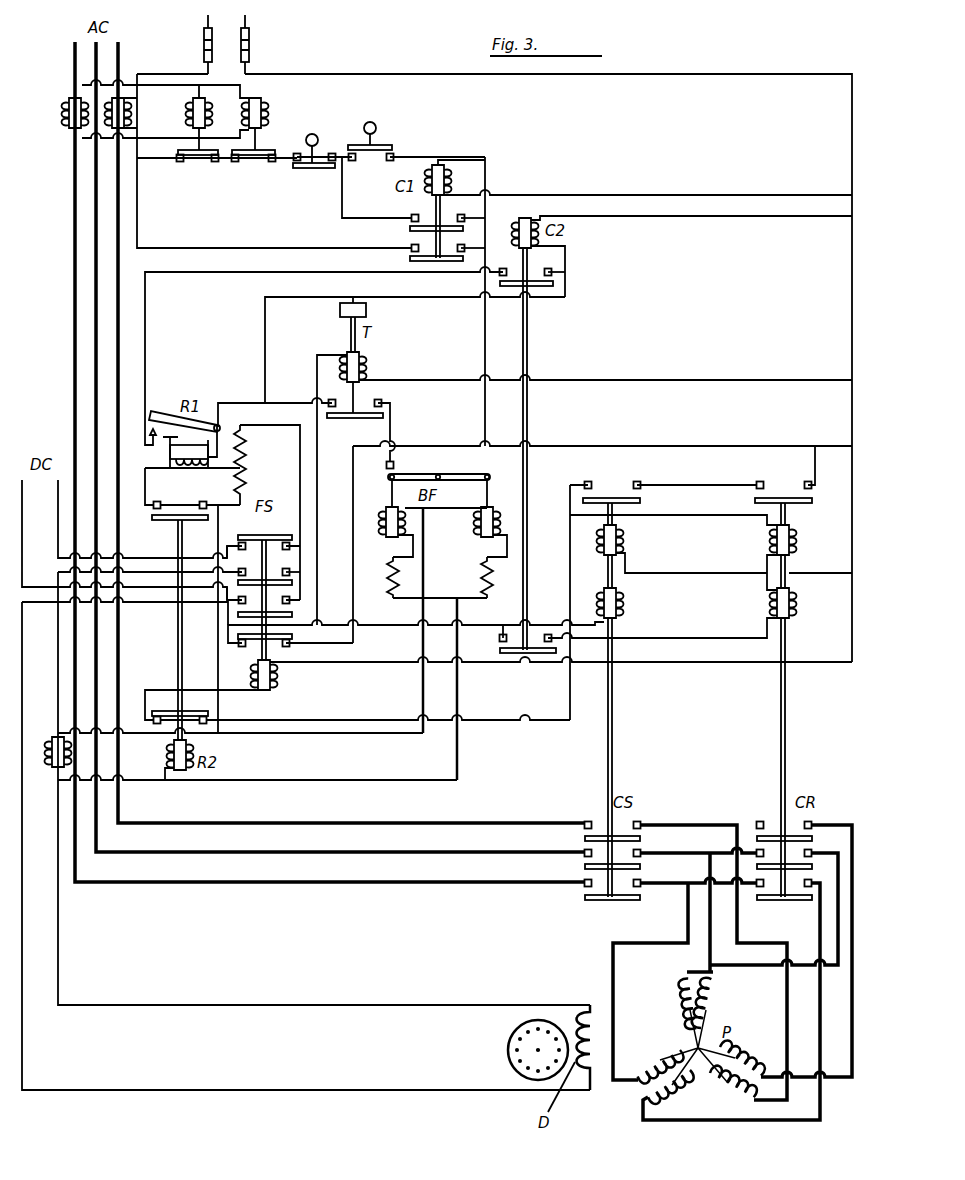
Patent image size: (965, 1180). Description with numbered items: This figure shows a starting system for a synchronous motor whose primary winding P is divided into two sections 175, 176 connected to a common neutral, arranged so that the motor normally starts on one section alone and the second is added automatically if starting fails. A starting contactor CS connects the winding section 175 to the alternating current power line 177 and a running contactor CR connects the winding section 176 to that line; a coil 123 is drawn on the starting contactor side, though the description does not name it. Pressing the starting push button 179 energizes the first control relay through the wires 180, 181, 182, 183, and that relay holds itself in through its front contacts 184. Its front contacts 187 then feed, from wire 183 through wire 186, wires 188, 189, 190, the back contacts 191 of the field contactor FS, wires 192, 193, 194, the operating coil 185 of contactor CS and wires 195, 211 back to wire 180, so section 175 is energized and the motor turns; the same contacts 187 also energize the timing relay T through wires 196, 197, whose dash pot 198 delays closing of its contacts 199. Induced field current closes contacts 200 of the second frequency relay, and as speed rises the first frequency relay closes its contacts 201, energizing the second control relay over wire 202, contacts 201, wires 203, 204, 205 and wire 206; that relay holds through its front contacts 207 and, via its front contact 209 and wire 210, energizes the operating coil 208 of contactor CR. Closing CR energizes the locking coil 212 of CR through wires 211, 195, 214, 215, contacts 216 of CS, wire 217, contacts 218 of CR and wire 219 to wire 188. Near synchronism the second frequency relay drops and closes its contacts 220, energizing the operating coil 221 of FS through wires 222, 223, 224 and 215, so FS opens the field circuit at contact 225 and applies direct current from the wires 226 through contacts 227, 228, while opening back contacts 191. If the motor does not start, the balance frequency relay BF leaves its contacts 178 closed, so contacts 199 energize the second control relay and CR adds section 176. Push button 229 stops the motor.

The relay coil 123 is at (623, 545).
The primary winding section 175 is at (718, 1002).
The primary winding section 176 is at (680, 1000).
The alternating current power line 177 is at (398, 853).
The contacts of balance frequency relay BF 178 is at (400, 468).
The starting push button 179 is at (386, 137).
The wire 180 is at (667, 77).
The wire 181 is at (647, 194).
The wire 182 is at (140, 162).
The wire 183 is at (180, 72).
The front contacts of relay C1 184 is at (428, 224).
The operating coil of starting contactor CS 185 is at (630, 617).
The wire 186 is at (233, 250).
The front contacts of relay C1 187 is at (420, 248).
The wire 188 is at (483, 325).
The wire 189 is at (435, 447).
The wire 190 is at (353, 530).
The back contacts of field contactor FS 191 is at (292, 648).
The wire 192 is at (228, 638).
The wire 193 is at (380, 639).
The wire 194 is at (540, 641).
The wire 195 is at (706, 577).
The wire 196 is at (322, 483).
The wire 197 is at (420, 376).
The dash pot 198 is at (368, 308).
The contacts of timing relay T 199 is at (366, 404).
The contacts of frequency relay R2 200 is at (192, 604).
The contacts of frequency relay R1 201 is at (160, 412).
The wire 202 is at (258, 268).
The wire 203 is at (244, 396).
The wire 204 is at (267, 345).
The wire 205 is at (566, 266).
The wire 206 is at (678, 218).
The front contacts of relay C2 207 is at (531, 290).
The operating coil of running contactor CR 208 is at (801, 619).
The front contact of relay C2 209 is at (517, 664).
The wire 210 is at (708, 641).
The wire 211 is at (820, 576).
The locking coil of running contactor CR 212 is at (795, 549).
The wire 214 is at (686, 516).
The wire 215 is at (570, 505).
The contacts of contactor CS 216 is at (619, 490).
The wire 217 is at (701, 488).
The contacts of contactor CR 218 is at (776, 490).
The wire 219 is at (740, 454).
The contacts of frequency relay R2 220 is at (185, 711).
The operating coil of field contactor FS 221 is at (272, 684).
The wire 222 is at (665, 665).
The wire 223 is at (155, 688).
The wire 224 is at (498, 724).
The contact of field contactor FS 225 is at (263, 588).
The direct current wires 226 is at (38, 502).
The contact of field contactor FS 227 is at (290, 575).
The contact of field contactor FS 228 is at (290, 605).
The push button 229 is at (352, 162).